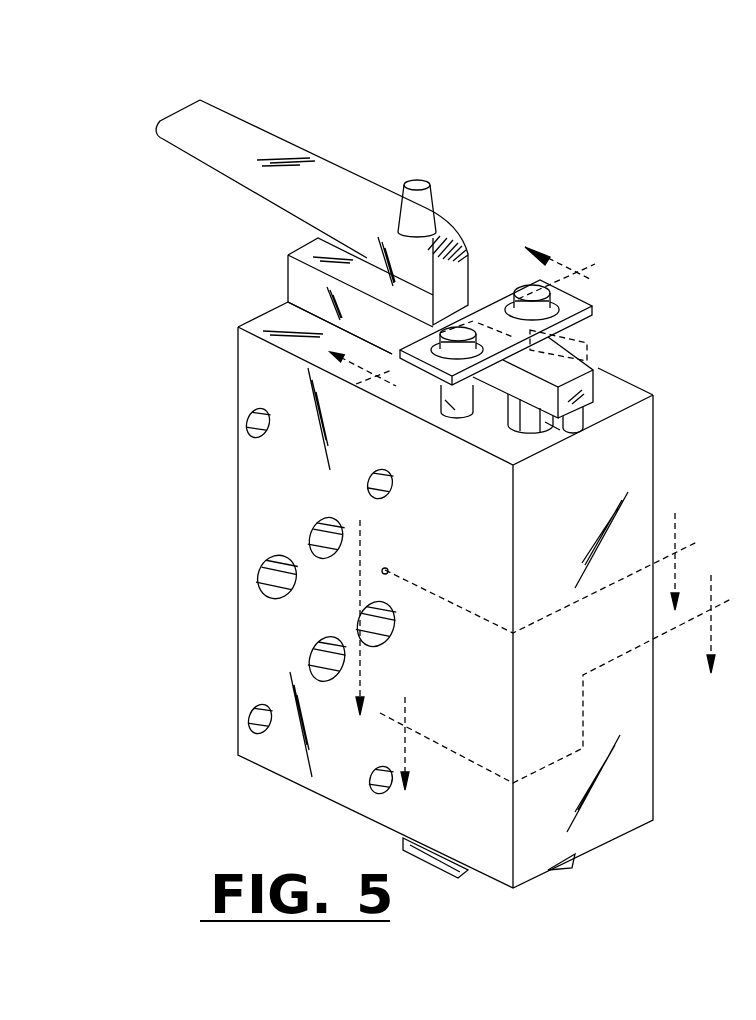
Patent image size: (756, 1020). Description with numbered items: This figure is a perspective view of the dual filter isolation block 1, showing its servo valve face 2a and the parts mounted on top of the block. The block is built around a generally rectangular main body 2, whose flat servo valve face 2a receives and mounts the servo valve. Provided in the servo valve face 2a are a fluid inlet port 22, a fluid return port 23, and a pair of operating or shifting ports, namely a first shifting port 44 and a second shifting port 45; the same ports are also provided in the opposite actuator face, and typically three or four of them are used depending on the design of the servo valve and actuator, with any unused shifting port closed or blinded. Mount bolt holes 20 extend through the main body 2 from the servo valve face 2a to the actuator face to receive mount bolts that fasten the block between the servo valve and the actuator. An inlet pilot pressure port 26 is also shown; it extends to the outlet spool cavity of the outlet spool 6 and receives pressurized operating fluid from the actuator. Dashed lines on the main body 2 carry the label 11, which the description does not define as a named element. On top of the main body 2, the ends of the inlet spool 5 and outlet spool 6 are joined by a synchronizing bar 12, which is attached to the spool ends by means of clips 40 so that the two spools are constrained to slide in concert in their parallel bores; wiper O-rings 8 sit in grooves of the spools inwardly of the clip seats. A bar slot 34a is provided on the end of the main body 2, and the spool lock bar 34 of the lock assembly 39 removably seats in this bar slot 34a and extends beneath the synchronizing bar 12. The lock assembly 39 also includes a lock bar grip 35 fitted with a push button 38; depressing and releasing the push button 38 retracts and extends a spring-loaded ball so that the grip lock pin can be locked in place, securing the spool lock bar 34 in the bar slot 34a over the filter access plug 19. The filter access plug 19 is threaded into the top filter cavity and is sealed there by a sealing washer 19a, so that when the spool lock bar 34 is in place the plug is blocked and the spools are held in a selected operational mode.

The dual filter isolation block 1 is at (655, 283).
The main body 2 is at (660, 476).
The servo valve face 2a is at (473, 822).
The inlet spool 5 is at (508, 264).
The outlet spool 6 is at (447, 311).
The wiper O-rings 8 is at (474, 324).
The first passage 11 is at (515, 617).
The synchronizing bar 12 is at (483, 310).
The filter access plug 19 is at (560, 432).
The sealing washer 19a is at (588, 437).
The mount bolt holes 20 is at (368, 486).
The fluid inlet port 22 is at (404, 627).
The fluid return port 23 is at (255, 577).
The inlet pilot pressure port 26 is at (386, 565).
The spool lock bar 34 is at (307, 285).
The bar slot 34a is at (298, 310).
The lock bar grip 35 is at (325, 182).
The push button 38 is at (442, 196).
The lock assembly 39 is at (244, 209).
The clips 40 is at (424, 357).
The first shifting port 44 is at (313, 672).
The second shifting port 45 is at (318, 540).